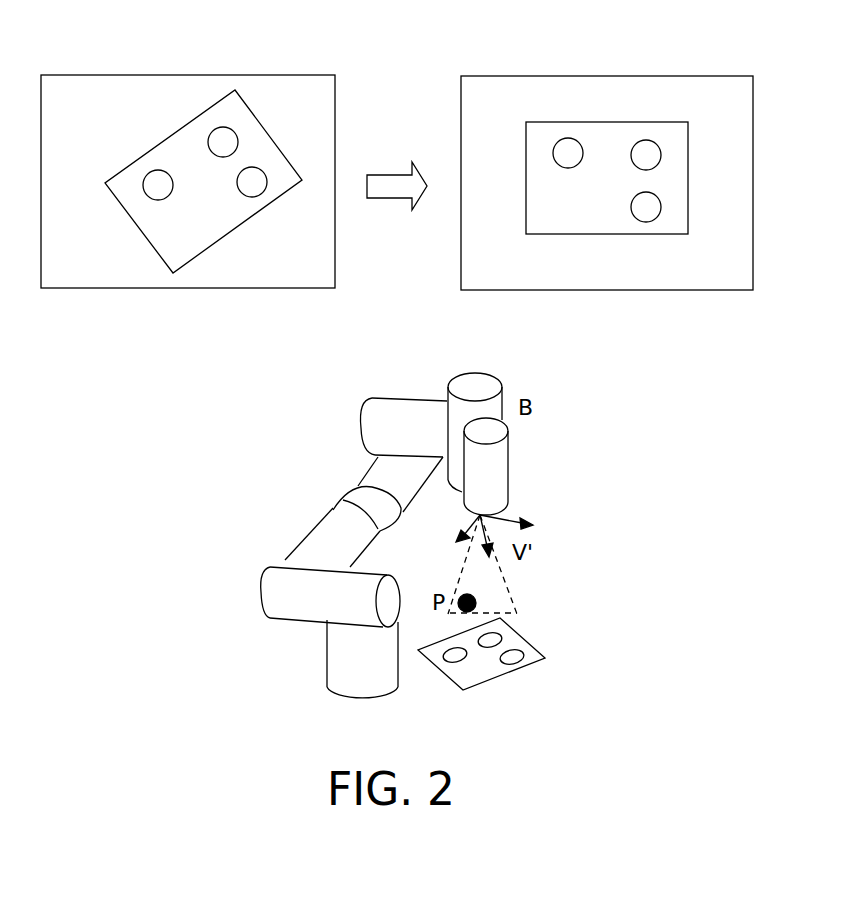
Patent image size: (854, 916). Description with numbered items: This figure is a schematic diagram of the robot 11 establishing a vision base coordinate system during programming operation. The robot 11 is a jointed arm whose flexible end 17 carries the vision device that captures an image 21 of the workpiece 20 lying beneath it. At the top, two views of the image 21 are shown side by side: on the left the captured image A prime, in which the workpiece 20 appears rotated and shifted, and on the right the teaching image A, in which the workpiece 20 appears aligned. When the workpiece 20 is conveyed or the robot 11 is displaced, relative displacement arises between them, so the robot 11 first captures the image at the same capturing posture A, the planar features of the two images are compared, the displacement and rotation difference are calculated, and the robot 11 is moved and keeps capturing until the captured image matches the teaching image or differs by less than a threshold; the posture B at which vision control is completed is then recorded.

The image 21 is at (397, 157).
The robot 11 is at (354, 548).
The flexible end 17 is at (474, 413).
The workpiece 20 is at (481, 674).